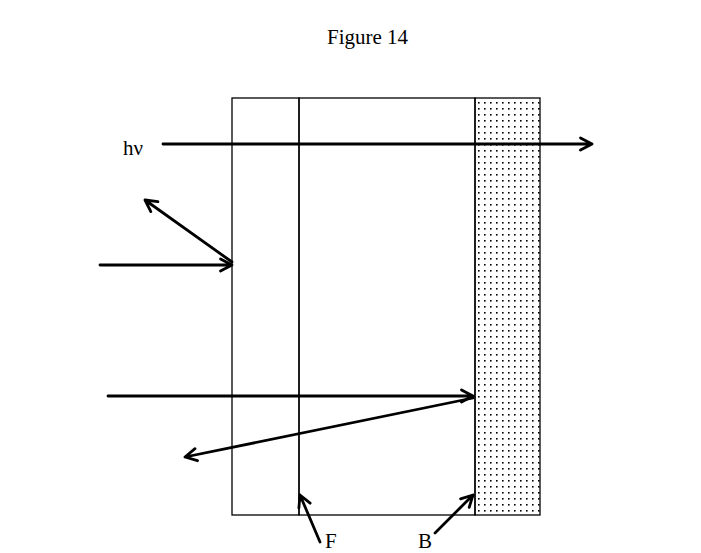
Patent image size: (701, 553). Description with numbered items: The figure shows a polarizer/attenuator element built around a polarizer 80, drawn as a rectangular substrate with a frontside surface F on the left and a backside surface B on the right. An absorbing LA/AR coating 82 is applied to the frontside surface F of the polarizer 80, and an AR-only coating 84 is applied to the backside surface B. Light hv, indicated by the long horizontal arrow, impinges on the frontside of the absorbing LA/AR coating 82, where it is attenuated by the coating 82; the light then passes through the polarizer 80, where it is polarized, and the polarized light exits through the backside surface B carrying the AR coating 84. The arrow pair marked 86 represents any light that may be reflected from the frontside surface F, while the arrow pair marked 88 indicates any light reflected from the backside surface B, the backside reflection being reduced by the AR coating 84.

The polarizer 80 is at (387, 306).
The absorbing LA/AR coating 82 is at (265, 306).
The AR coating 84 is at (507, 306).
The light reflected from the frontside surface 86 is at (144, 238).
The light reflected from the backside surface 88 is at (265, 425).